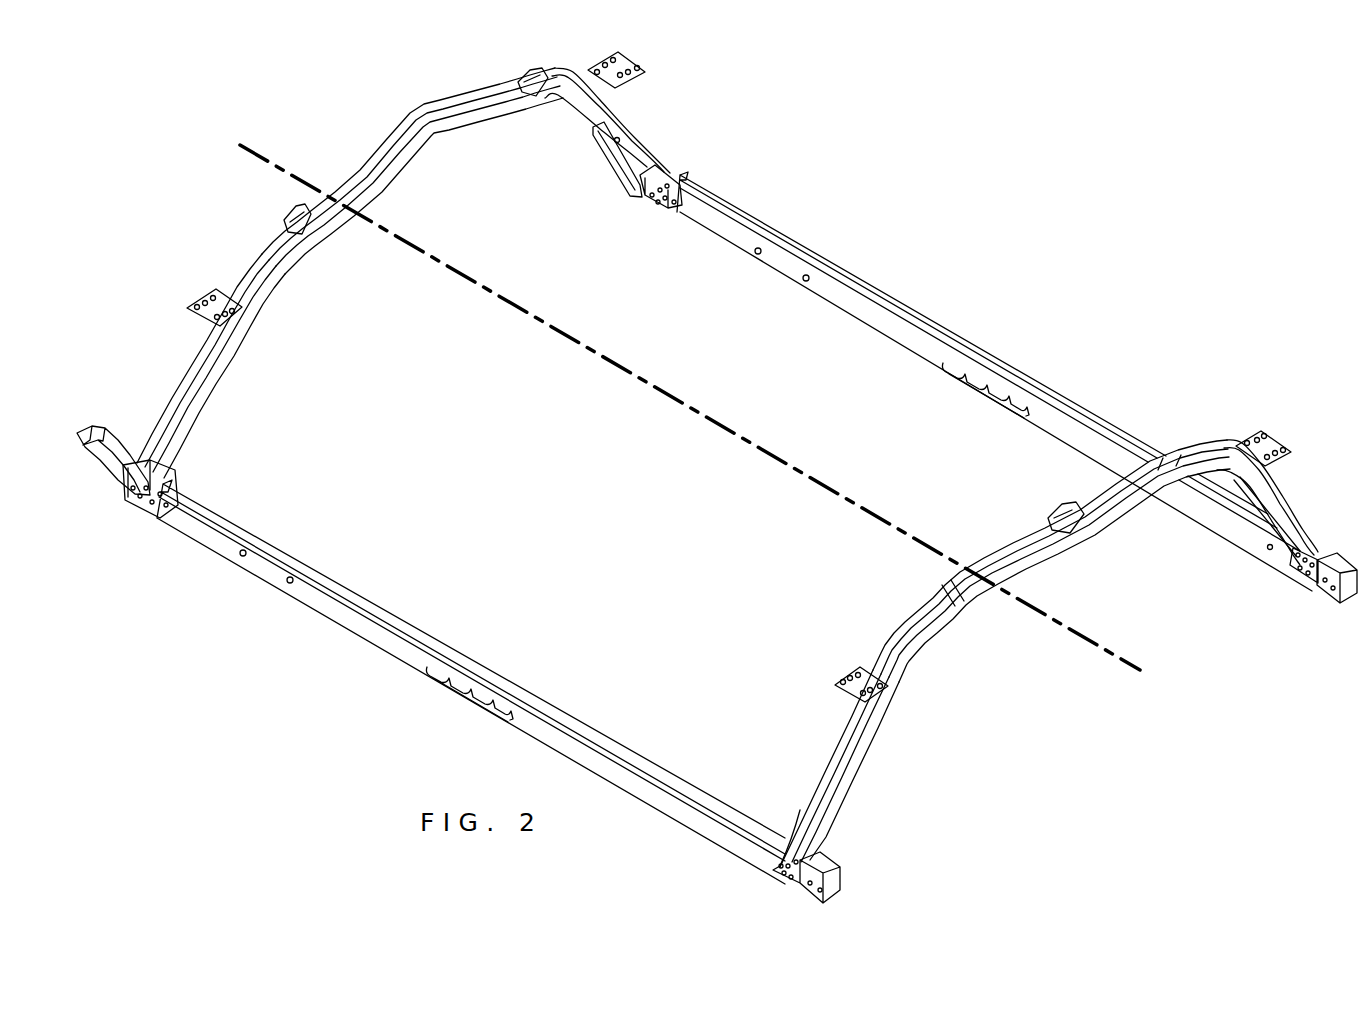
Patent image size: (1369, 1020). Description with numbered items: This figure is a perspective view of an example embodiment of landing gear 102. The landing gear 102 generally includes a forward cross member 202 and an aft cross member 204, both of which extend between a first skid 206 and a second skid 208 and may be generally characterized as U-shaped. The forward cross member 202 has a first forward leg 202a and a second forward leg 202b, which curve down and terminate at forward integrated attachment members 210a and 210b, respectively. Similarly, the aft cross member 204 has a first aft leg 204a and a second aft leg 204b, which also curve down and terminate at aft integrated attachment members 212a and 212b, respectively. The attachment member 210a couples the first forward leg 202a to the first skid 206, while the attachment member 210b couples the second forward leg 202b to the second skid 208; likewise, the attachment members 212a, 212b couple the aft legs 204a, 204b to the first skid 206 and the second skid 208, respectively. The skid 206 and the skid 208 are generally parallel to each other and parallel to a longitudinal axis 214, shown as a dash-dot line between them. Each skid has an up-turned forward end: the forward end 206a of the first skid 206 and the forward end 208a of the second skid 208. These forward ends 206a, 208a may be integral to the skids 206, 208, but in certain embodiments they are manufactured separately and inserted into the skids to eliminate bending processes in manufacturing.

The landing gear 102 is at (1014, 190).
The forward cross member 202 is at (418, 118).
The first forward leg 202a is at (220, 372).
The second forward leg 202b is at (640, 118).
The aft cross member 204 is at (1013, 542).
The first aft leg 204a is at (857, 773).
The second aft leg 204b is at (1240, 495).
The first skid 206 is at (342, 623).
The forward end of first skid 206a is at (103, 427).
The second skid 208 is at (910, 310).
The forward end of second skid 208a is at (603, 144).
The forward integrated attachment member 210a is at (177, 467).
The forward integrated attachment member 210b is at (697, 139).
The aft integrated attachment member 212a is at (797, 810).
The aft integrated attachment member 212b is at (1322, 528).
The longitudinal axis 214 is at (657, 390).